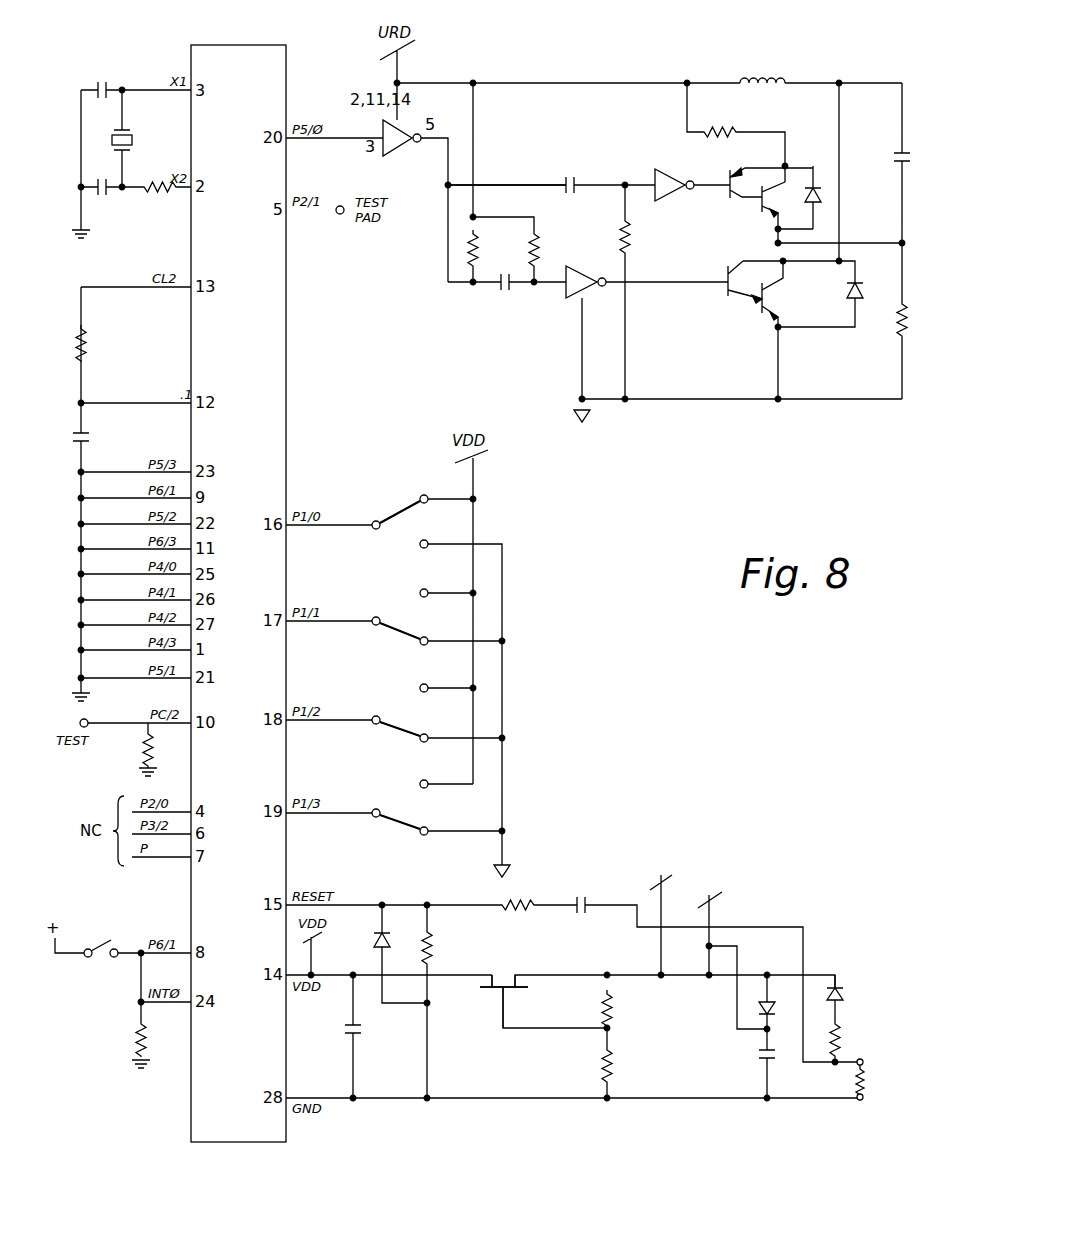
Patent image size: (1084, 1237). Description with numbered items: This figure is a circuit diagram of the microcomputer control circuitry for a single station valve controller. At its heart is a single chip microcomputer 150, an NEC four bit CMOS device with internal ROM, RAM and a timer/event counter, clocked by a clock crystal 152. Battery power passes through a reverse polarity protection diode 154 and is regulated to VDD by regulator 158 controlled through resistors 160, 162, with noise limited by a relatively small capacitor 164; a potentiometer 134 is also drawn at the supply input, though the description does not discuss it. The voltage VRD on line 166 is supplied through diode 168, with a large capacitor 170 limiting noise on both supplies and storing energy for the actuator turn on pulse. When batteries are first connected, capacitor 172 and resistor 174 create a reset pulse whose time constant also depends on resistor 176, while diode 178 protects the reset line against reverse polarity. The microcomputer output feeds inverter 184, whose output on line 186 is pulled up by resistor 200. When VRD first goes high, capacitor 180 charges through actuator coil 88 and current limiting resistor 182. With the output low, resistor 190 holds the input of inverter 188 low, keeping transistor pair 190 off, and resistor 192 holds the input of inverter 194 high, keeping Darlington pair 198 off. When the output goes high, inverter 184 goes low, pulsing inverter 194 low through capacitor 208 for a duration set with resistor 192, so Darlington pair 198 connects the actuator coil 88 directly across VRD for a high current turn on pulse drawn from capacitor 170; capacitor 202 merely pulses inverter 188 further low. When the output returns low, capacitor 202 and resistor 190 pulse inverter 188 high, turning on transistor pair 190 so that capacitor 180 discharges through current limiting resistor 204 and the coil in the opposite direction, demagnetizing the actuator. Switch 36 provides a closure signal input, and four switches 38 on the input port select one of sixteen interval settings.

The single chip microcomputer 150 is at (281, 369).
The clock crystal 152 is at (130, 140).
The switch 36 is at (100, 940).
The switches 38 is at (394, 506).
The inverter 184 is at (392, 150).
The line 186 is at (505, 182).
The capacitor 202 is at (571, 176).
The inverter 188 is at (660, 168).
The current limiting resistor 204 is at (722, 131).
The actuator coil 88 is at (770, 78).
The capacitor 180 is at (905, 155).
The transistor pair 190 is at (745, 166).
The pull up resistor 200 is at (470, 258).
The resistor 192 is at (528, 246).
The capacitor 208 is at (496, 292).
The inverter 194 is at (568, 297).
The Darlington pair 198 is at (735, 300).
The current limiting resistor 182 is at (907, 314).
The resistor 174 is at (515, 898).
The capacitor 172 is at (588, 893).
The diode 178 is at (390, 925).
The resistor 176 is at (432, 952).
The capacitor 164 is at (355, 1043).
The regulator 158 is at (505, 975).
The resistor 160 is at (612, 1012).
The resistor 162 is at (612, 1062).
The line 166 is at (722, 906).
The diode 168 is at (776, 1000).
The diode 154 is at (846, 988).
The capacitor 170 is at (760, 1066).
The potentiometer 134 is at (866, 1084).